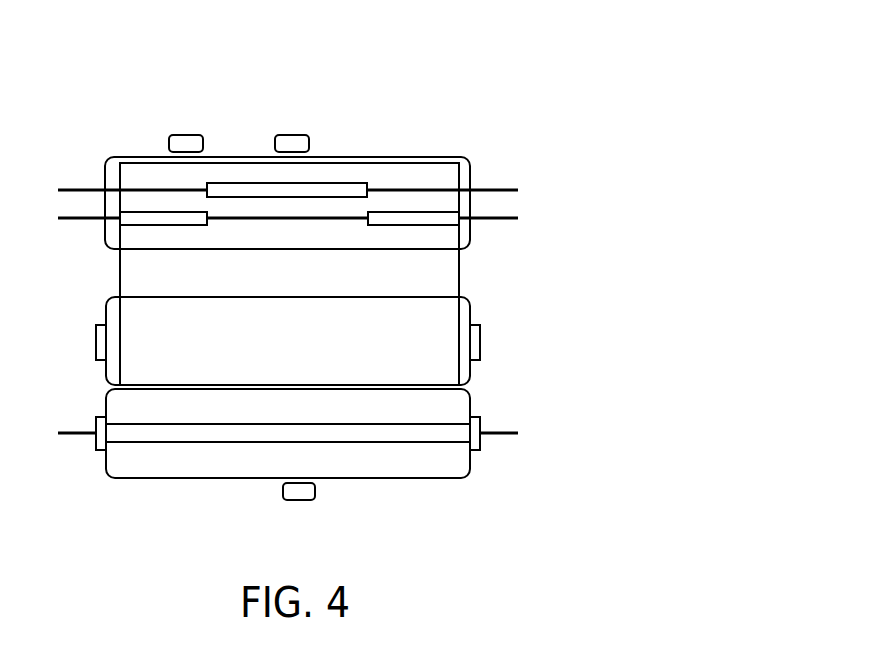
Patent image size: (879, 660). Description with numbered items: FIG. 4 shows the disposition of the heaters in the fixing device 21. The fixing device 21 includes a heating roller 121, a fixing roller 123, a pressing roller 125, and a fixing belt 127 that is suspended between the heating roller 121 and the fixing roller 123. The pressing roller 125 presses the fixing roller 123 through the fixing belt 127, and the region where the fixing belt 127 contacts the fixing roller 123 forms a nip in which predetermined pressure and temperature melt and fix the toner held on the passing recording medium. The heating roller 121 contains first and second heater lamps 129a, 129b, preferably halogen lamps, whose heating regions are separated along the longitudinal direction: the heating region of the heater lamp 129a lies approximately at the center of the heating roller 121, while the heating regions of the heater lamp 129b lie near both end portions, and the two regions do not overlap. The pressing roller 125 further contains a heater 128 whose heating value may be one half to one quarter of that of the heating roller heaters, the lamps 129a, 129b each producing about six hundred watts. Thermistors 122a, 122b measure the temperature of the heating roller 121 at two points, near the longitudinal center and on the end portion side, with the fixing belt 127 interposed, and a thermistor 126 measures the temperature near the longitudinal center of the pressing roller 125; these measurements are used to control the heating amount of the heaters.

The fixing device 21 is at (505, 105).
The heating roller 121 is at (471, 172).
The thermistor 122a is at (292, 134).
The thermistor 122b is at (186, 134).
The fixing roller 123 is at (478, 366).
The pressing roller 125 is at (437, 480).
The thermistor 126 is at (300, 501).
The fixing belt 127 is at (460, 270).
The heater 128 is at (150, 444).
The first heater lamp 129a is at (350, 183).
The second heater lamp 129b is at (435, 212).